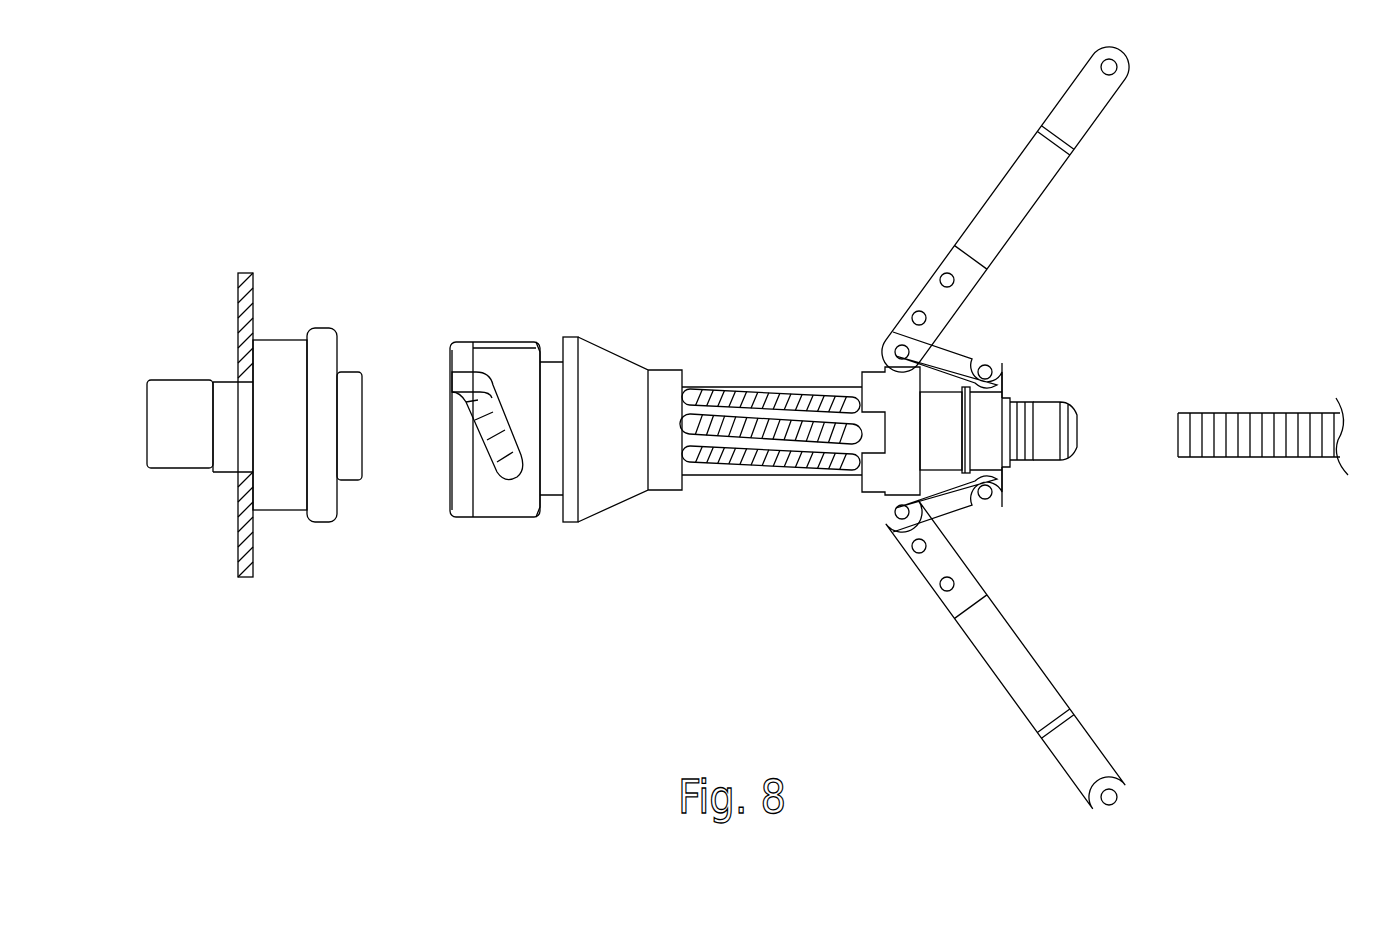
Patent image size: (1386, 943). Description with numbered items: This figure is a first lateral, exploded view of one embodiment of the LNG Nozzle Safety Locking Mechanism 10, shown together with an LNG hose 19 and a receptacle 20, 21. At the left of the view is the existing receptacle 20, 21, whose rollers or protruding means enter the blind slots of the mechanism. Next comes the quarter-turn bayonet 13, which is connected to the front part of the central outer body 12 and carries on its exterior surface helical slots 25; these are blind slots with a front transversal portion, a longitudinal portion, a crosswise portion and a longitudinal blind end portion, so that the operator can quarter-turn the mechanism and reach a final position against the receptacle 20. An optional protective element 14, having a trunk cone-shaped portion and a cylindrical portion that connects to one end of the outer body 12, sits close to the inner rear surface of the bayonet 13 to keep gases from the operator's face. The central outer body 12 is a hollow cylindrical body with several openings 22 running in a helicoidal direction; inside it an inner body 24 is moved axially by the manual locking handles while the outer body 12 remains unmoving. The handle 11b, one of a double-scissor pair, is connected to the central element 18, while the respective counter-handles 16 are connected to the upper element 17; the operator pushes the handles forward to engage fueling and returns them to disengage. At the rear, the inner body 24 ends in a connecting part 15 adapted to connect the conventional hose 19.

The LNG Nozzle Safety Locking Mechanism 10 is at (1147, 132).
The handle 11b is at (1020, 190).
The central outer body 12 is at (744, 394).
The quarter-turn bayonet 13 is at (497, 498).
The protective element 14 is at (615, 480).
The connecting part 15 is at (1050, 453).
The counter-handle 16 is at (955, 347).
The upper element 17 is at (985, 425).
The central element 18 is at (875, 438).
The hose 19 is at (1232, 420).
The receptacle 20 is at (282, 362).
The receptacle 21 is at (243, 276).
The openings 22 is at (765, 395).
The inner body 24 is at (937, 472).
The helical slots 25 is at (473, 416).